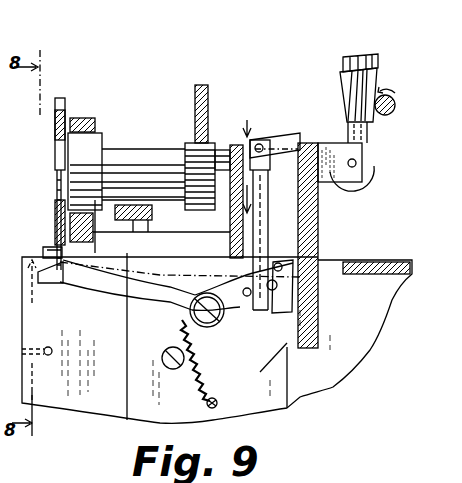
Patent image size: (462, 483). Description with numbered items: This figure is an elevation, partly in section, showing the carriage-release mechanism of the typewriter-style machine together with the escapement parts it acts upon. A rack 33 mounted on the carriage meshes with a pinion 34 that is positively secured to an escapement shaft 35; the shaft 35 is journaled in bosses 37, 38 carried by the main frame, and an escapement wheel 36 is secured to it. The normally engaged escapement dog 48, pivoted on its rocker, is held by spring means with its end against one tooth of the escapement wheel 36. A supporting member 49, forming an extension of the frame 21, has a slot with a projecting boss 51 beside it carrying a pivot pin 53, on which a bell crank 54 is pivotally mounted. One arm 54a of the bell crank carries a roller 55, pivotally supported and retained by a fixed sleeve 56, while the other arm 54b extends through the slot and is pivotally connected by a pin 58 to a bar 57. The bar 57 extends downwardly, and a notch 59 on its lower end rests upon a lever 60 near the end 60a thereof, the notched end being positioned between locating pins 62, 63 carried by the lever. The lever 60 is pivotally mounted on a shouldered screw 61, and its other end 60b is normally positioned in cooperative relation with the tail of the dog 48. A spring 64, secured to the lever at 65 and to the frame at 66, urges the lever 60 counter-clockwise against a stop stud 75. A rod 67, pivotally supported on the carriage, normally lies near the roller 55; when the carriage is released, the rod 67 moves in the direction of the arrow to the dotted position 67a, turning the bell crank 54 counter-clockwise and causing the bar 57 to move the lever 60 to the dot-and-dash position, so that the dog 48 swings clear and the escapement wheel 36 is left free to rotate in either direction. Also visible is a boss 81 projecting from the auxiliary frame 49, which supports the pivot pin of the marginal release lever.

The frame 21 is at (367, 338).
The rack 33 is at (195, 105).
The pinion 34 is at (192, 210).
The escapement shaft 35 is at (128, 146).
The escapement wheel 36 is at (57, 135).
The boss 37 is at (240, 146).
The boss 38 is at (80, 118).
The escapement dog 48 is at (47, 252).
The supporting member 49 is at (318, 246).
The projecting boss 51 is at (357, 186).
The pivot pin 53 is at (356, 163).
The bell crank 54 is at (346, 130).
The arm of the bell crank 54a is at (368, 128).
The arm of the bell crank 54b is at (287, 144).
The roller 55 is at (348, 93).
The fixed sleeve 56 is at (343, 63).
The bar 57 is at (268, 190).
The pin 58 is at (261, 145).
The notch 59 is at (246, 288).
The lever 60 is at (168, 272).
The end of the lever 60a is at (310, 283).
The end of the lever 60b is at (52, 283).
The shouldered screw 61 is at (207, 327).
The locating pin 62 is at (280, 313).
The locating pin 63 is at (232, 291).
The spring 64 is at (204, 362).
The spring attachment point on lever 65 is at (160, 345).
The spring attachment point on frame 66 is at (207, 403).
The rod 67 is at (383, 115).
The dotted position of the rod 67a is at (380, 95).
The stop stud 75 is at (278, 262).
The boss 81 is at (273, 364).